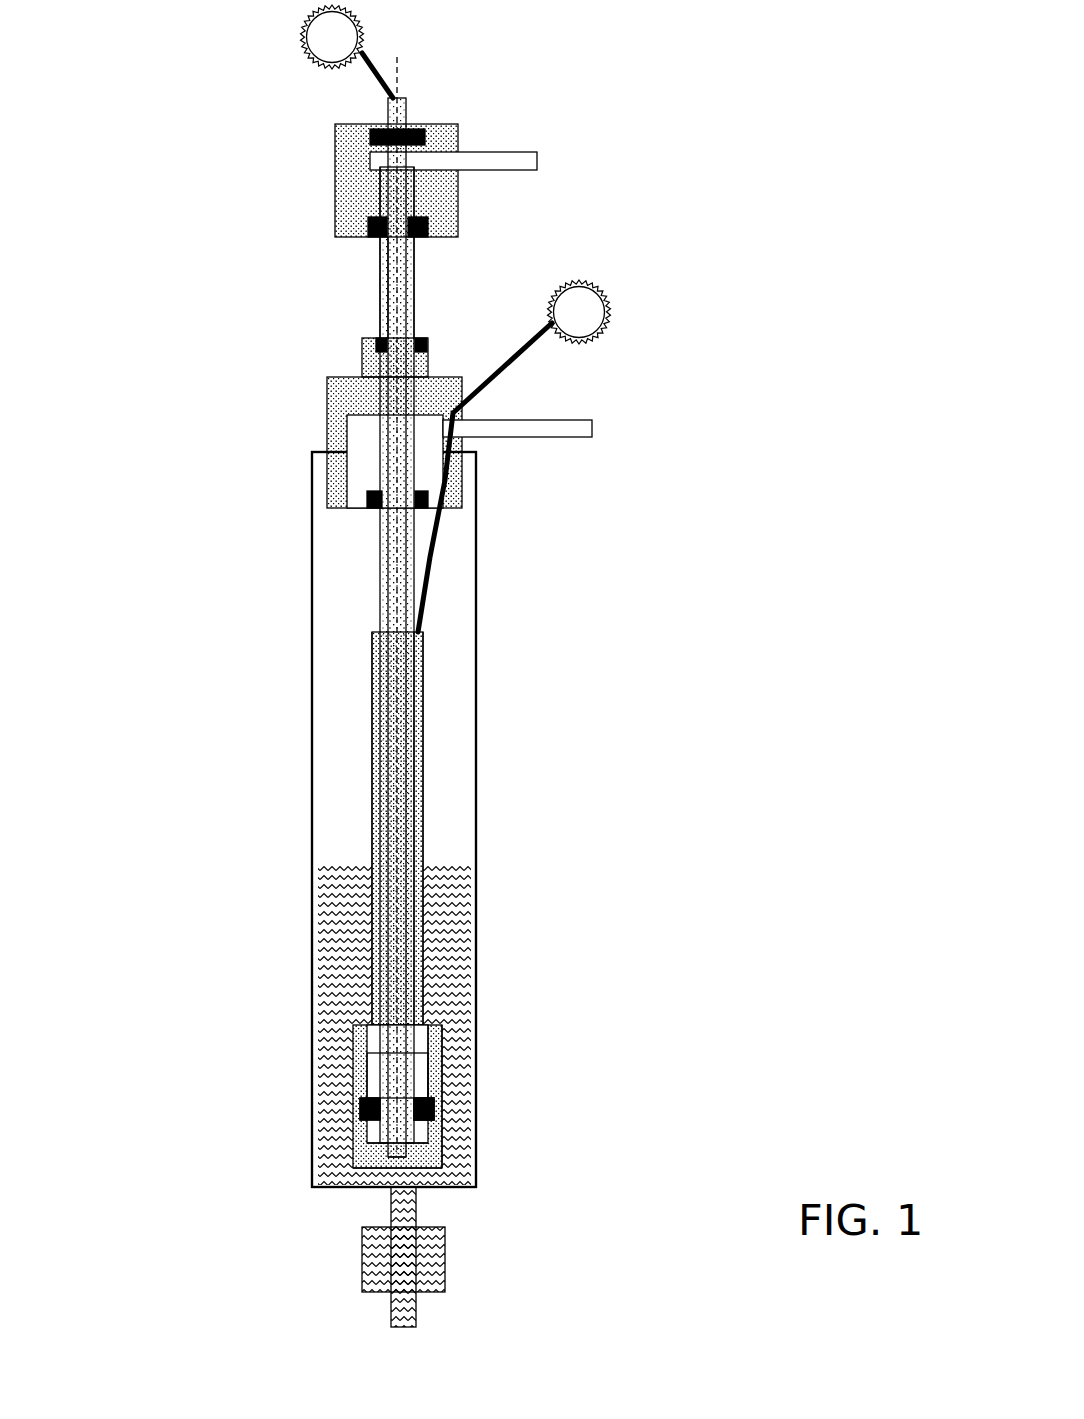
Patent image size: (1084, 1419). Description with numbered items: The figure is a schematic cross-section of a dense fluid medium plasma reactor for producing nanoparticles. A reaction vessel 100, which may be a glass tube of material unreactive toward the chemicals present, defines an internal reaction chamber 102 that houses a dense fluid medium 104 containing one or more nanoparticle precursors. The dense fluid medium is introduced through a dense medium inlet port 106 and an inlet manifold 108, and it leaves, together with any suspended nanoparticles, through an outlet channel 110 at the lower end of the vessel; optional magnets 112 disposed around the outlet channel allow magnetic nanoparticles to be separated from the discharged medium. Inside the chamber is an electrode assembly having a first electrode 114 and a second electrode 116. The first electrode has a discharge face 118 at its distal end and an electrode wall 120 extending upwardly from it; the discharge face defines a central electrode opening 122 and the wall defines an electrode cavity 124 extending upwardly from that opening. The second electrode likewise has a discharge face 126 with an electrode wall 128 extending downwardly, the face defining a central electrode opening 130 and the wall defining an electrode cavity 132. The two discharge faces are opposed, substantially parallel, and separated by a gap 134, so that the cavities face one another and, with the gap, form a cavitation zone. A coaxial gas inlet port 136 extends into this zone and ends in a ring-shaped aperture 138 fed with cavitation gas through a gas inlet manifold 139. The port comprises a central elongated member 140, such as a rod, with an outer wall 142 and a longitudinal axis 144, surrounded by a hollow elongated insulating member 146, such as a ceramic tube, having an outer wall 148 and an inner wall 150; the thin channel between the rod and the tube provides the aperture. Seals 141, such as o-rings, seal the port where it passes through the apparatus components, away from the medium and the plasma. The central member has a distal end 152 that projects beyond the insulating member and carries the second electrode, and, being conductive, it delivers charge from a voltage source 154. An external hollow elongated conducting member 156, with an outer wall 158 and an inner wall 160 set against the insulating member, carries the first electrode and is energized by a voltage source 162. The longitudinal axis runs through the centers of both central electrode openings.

The reaction vessel 100 is at (312, 823).
The reaction chamber 102 is at (460, 587).
The dense fluid medium 104 is at (340, 930).
The dense medium inlet port 106 is at (557, 428).
The inlet manifold 108 is at (340, 398).
The outlet channel 110 is at (392, 1320).
The magnets 112 is at (362, 1248).
The first electrode 114 is at (445, 1043).
The second electrode 116 is at (467, 1143).
The discharge face 118 is at (430, 1110).
The electrode wall 120 is at (440, 1068).
The central electrode opening 122 is at (362, 1105).
The electrode cavity 124 is at (370, 1062).
The discharge face 126 is at (442, 1121).
The electrode wall 128 is at (367, 1135).
The central electrode opening 130 is at (442, 1108).
The electrode cavity 132 is at (363, 1118).
The gap 134 is at (437, 1097).
The gas inlet port 136 is at (362, 788).
The aperture 138 is at (450, 1170).
The gas inlet manifold 139 is at (440, 223).
The central elongated member 140 is at (397, 745).
The seals 141 is at (367, 223).
The outer wall 142 is at (412, 778).
The longitudinal axis 144 is at (400, 62).
The hollow elongated insulating member 146 is at (415, 257).
The outer wall 148 is at (380, 257).
The inner wall 150 is at (390, 292).
The distal end 152 is at (420, 1173).
The voltage source 154 is at (323, 42).
The external hollow elongated conducting member 156 is at (418, 705).
The outer wall 158 is at (422, 687).
The inner wall 160 is at (415, 670).
The voltage source 162 is at (578, 313).